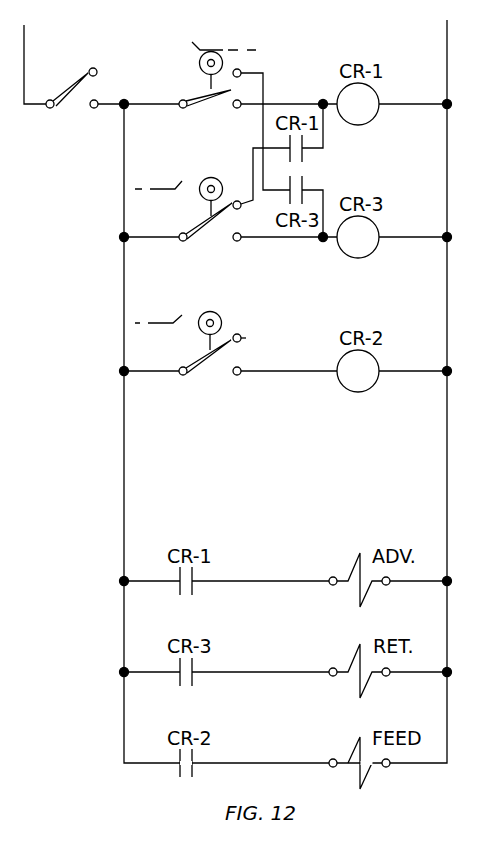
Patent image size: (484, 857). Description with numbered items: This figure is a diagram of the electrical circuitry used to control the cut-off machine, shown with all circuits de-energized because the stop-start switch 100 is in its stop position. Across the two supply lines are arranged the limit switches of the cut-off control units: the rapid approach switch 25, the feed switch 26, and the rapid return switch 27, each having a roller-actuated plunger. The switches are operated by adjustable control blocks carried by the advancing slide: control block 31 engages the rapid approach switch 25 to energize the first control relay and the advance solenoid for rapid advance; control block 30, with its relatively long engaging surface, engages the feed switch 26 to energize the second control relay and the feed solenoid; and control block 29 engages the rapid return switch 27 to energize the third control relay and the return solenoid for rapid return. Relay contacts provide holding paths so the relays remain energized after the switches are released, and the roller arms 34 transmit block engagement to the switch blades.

The STOP-START switch 100 is at (76, 109).
The rapid approach switch 25 is at (258, 123).
The feed switch 26 is at (232, 381).
The rapid return switch 27 is at (232, 245).
The control block 29 is at (174, 186).
The control block 30 is at (168, 326).
The control block 31 is at (192, 53).
The roller actuator arm 34 is at (223, 60).